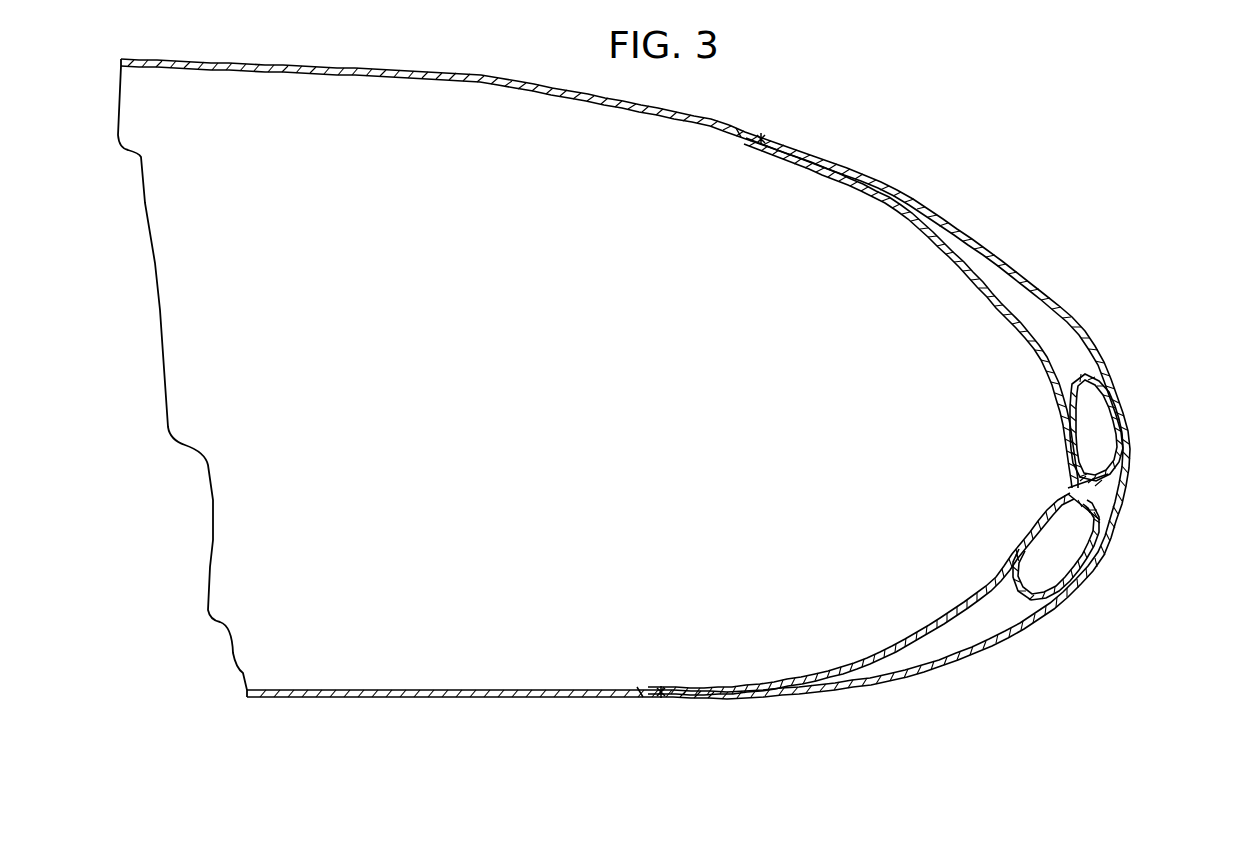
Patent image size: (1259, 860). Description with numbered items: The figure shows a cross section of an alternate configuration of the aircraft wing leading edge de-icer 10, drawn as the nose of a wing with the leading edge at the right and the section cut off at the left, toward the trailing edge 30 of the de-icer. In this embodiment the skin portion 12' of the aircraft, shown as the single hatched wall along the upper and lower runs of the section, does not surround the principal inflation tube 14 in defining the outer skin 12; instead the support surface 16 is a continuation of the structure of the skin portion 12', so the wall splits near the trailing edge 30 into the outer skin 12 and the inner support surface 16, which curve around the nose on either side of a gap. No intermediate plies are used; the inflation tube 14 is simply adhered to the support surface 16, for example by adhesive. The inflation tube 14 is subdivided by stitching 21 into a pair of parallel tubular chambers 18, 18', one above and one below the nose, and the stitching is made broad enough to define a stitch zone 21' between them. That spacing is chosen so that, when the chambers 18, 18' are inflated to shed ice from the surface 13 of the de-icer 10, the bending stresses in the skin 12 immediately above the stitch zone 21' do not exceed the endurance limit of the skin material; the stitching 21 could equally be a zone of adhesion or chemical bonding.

The aircraft wing leading edge de-icer 10 is at (1184, 356).
The outer skin 12 is at (905, 412).
The skin portion 12' is at (426, 397).
The surface 13 is at (1098, 357).
The principal inflation tube 14 is at (1060, 590).
The support surface 16 is at (1026, 342).
The tubular chamber 18 is at (1074, 579).
The tubular chamber 18' is at (1136, 427).
The stitching 21 is at (1134, 504).
The stitch zone 21' is at (1149, 498).
The trailing edge 30 is at (797, 145).